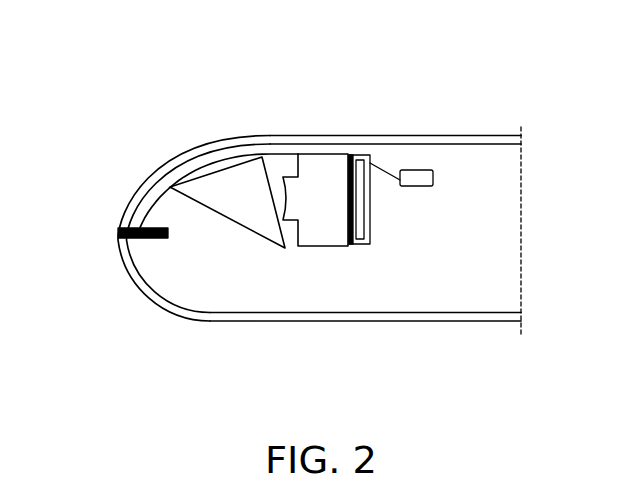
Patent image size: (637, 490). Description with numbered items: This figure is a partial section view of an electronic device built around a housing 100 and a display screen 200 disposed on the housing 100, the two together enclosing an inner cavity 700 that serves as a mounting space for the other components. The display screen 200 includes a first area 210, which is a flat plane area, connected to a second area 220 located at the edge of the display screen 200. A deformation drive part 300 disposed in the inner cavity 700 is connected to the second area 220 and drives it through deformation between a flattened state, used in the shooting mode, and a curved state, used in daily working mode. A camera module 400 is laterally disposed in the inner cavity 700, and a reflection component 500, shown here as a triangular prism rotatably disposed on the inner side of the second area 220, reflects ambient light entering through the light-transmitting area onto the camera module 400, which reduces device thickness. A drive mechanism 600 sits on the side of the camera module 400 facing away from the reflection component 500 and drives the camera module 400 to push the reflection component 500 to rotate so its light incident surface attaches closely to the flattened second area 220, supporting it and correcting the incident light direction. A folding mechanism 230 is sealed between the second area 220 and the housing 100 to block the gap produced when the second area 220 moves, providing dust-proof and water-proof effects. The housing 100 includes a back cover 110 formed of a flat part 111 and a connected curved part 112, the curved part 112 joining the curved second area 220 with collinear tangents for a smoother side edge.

The housing 100 is at (319, 274).
The back cover 110 is at (194, 274).
The flat part 111 is at (257, 322).
The curved part 112 is at (133, 280).
The display screen 200 is at (365, 167).
The first area 210 is at (351, 152).
The second area 220 is at (242, 146).
The folding mechanism 230 is at (137, 228).
The deformation drive part 300 is at (198, 168).
The camera module 400 is at (342, 227).
The reflection component 500 is at (207, 193).
The drive mechanism 600 is at (357, 178).
The inner cavity 700 is at (482, 258).